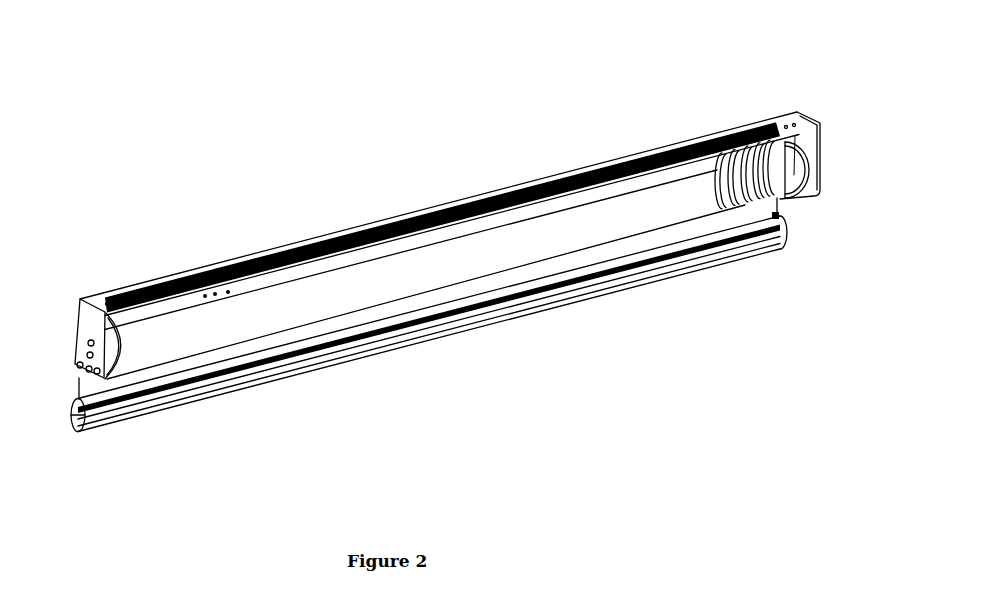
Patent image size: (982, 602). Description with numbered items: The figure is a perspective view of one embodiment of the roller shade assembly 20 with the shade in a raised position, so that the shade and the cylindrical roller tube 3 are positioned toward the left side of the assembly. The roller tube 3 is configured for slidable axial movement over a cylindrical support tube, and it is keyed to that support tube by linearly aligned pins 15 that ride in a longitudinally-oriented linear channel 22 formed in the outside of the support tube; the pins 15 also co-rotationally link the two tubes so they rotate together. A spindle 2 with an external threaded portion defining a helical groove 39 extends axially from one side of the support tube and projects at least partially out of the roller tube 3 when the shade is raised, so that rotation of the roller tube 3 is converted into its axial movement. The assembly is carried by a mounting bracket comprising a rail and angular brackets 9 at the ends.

The roller shade assembly 20 is at (546, 142).
The spindle 2 is at (797, 112).
The helical groove 39 is at (697, 137).
The angular brackets 9 is at (90, 336).
The roller tube 3 is at (380, 263).
The linear channel 22 is at (136, 313).
The pins 15 is at (200, 267).